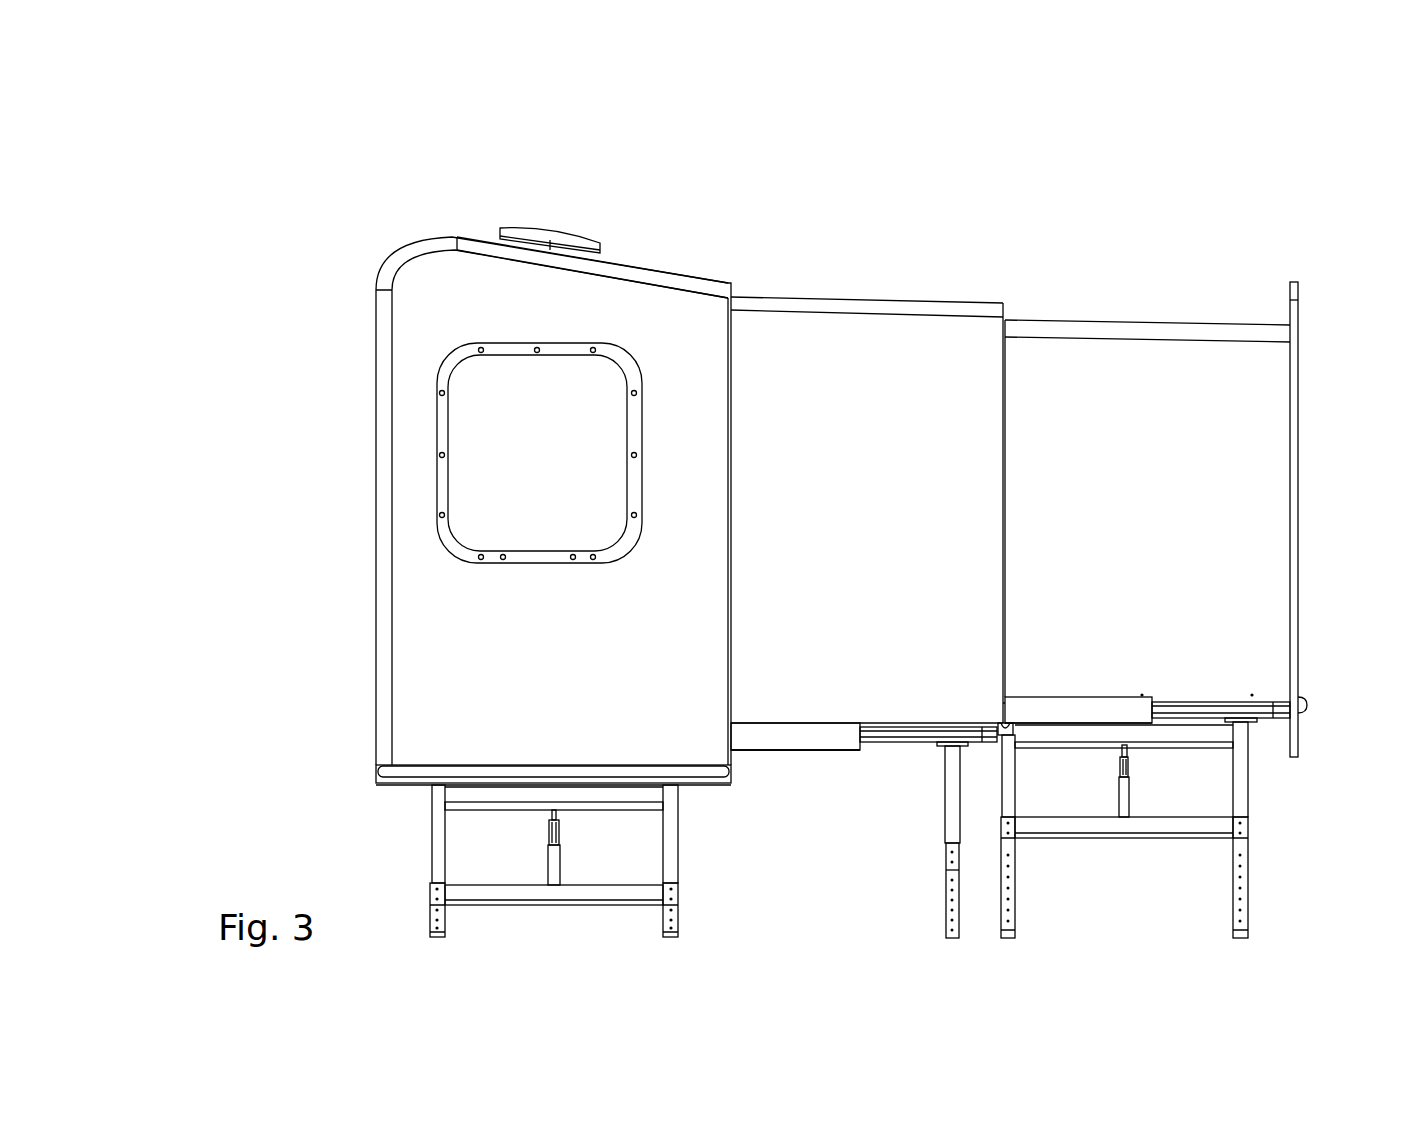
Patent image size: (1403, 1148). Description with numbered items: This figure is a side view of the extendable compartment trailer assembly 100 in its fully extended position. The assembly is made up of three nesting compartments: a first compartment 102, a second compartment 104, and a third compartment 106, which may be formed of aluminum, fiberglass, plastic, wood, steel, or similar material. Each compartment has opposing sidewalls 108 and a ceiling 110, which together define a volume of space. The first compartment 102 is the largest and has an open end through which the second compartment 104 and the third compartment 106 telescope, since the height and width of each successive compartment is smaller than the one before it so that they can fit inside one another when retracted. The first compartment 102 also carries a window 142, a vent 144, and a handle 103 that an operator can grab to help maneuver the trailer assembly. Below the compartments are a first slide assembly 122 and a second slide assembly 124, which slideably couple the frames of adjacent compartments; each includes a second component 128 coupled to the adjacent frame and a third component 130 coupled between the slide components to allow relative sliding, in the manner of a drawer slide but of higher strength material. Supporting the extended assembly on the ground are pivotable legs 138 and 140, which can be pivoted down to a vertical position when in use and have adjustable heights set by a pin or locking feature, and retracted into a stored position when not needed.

The extendable compartment trailer assembly 100 is at (785, 152).
The first compartment 102 is at (475, 213).
The handle 103 is at (418, 770).
The second compartment 104 is at (917, 288).
The third compartment 106 is at (1205, 307).
The sidewalls 108 is at (700, 728).
The ceiling 110 is at (678, 277).
The first slide assembly 122 is at (752, 743).
The second slide assembly 124 is at (1050, 712).
The second component 128 is at (910, 735).
The third component 130 is at (797, 738).
The pivotable leg 138 is at (583, 890).
The pivotable leg 140 is at (1242, 797).
The window 142 is at (467, 427).
The vent 144 is at (590, 238).